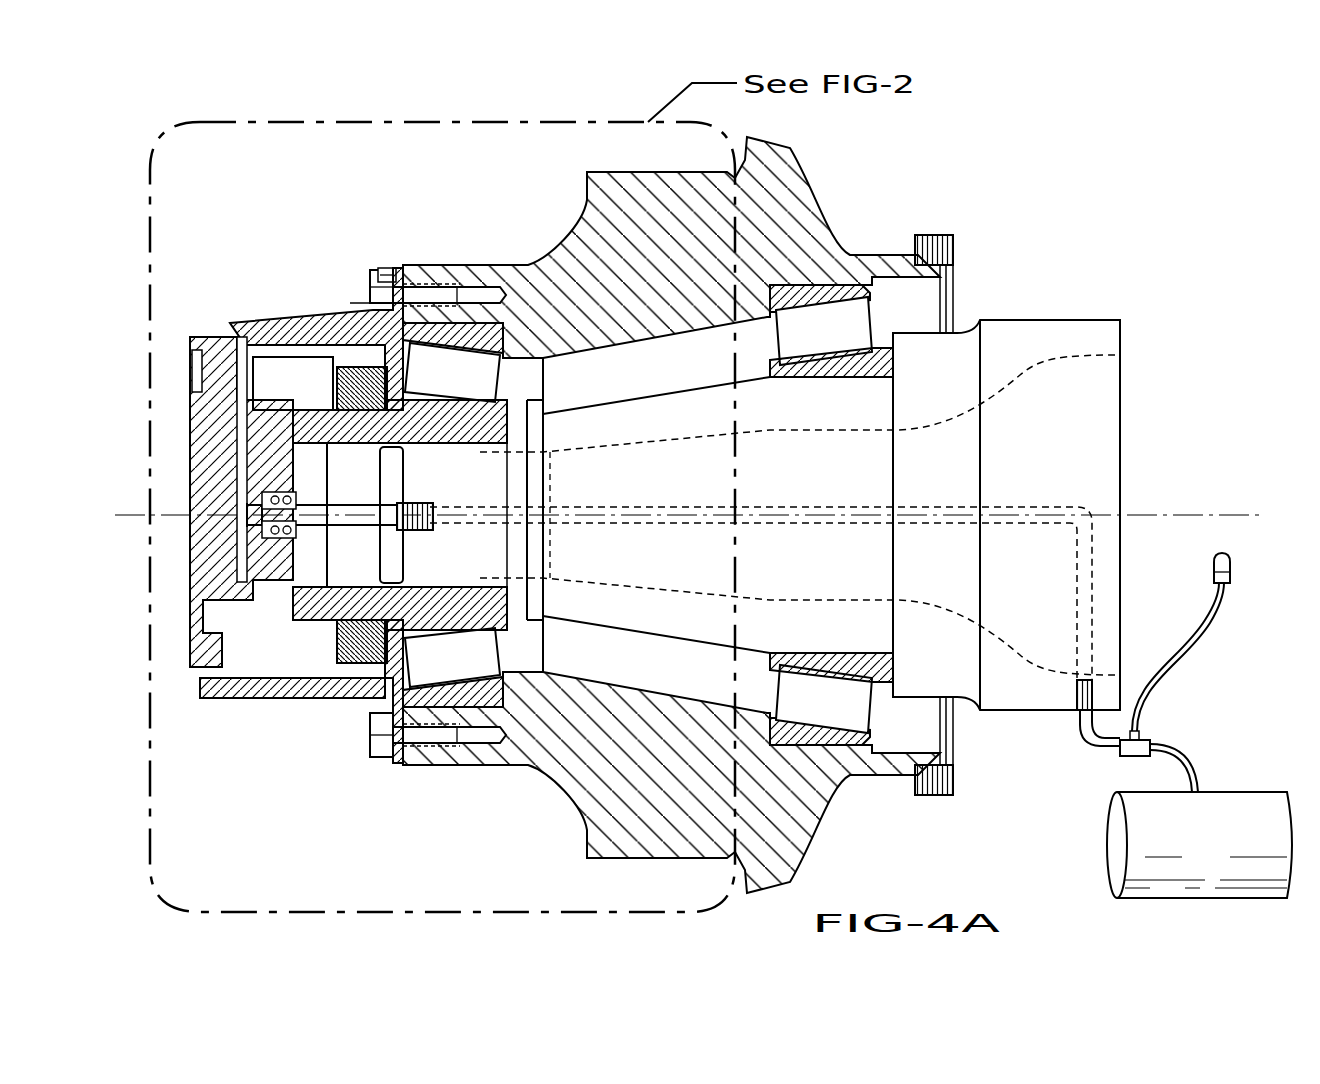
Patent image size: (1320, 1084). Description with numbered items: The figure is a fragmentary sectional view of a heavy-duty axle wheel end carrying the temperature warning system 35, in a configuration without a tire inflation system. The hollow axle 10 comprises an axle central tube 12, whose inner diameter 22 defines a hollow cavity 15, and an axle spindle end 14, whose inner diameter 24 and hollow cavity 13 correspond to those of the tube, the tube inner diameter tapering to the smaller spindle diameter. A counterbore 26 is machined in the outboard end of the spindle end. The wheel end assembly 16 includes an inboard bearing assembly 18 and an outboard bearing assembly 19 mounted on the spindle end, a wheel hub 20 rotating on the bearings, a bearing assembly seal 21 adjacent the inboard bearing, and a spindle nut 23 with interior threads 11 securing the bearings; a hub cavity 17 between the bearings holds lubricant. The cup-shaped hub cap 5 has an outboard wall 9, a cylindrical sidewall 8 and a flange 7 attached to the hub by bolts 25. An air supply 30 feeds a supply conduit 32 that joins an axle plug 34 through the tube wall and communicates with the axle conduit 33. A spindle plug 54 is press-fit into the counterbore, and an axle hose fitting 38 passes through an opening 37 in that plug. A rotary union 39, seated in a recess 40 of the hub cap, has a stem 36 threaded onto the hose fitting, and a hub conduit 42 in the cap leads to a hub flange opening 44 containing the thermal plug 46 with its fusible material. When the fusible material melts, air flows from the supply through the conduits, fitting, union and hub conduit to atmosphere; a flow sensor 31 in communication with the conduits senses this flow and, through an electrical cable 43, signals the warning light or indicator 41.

The hub cap 5 is at (186, 484).
The flange 7 is at (383, 285).
The cylindrical sidewall 8 is at (297, 322).
The outboard disk or wall 9 is at (188, 548).
The axle 10 is at (1034, 314).
The interior threads 11 is at (420, 410).
The axle central tube 12 is at (1117, 318).
The hollow cavity 13 is at (565, 478).
The axle spindle end 14 is at (630, 400).
The hollow cavity 15 is at (1093, 385).
The wheel end assembly 16 is at (590, 172).
The hub cavity 17 is at (678, 360).
The inboard bearing assembly 18 is at (848, 275).
The outboard bearing assembly 19 is at (513, 325).
The wheel hub 20 is at (625, 172).
The bearing assembly seal 21 is at (955, 300).
The inner diameter 22 is at (1075, 348).
The spindle nut 23 is at (347, 357).
The inner diameter 24 is at (660, 440).
The bolts 25 is at (370, 300).
The counterbore 26 is at (340, 595).
The air supply 30 is at (1235, 792).
The flow sensor 31 is at (1130, 757).
The supply conduit 32 is at (1175, 760).
The axle conduit 33 is at (1090, 510).
The axle plug 34 is at (1075, 690).
The temperature warning system 35 is at (393, 266).
The stem 36 is at (318, 430).
The opening 37 is at (410, 512).
The axle hose fitting 38 is at (383, 460).
The rotary union 39 is at (280, 543).
The recess 40 is at (275, 494).
The warning light or indicator 41 is at (1215, 570).
The hub conduit 42 is at (395, 298).
The electrical cable 43 is at (1210, 660).
The hub flange opening 44 is at (353, 303).
The thermal plug 46 is at (383, 267).
The spindle plug 54 is at (376, 546).